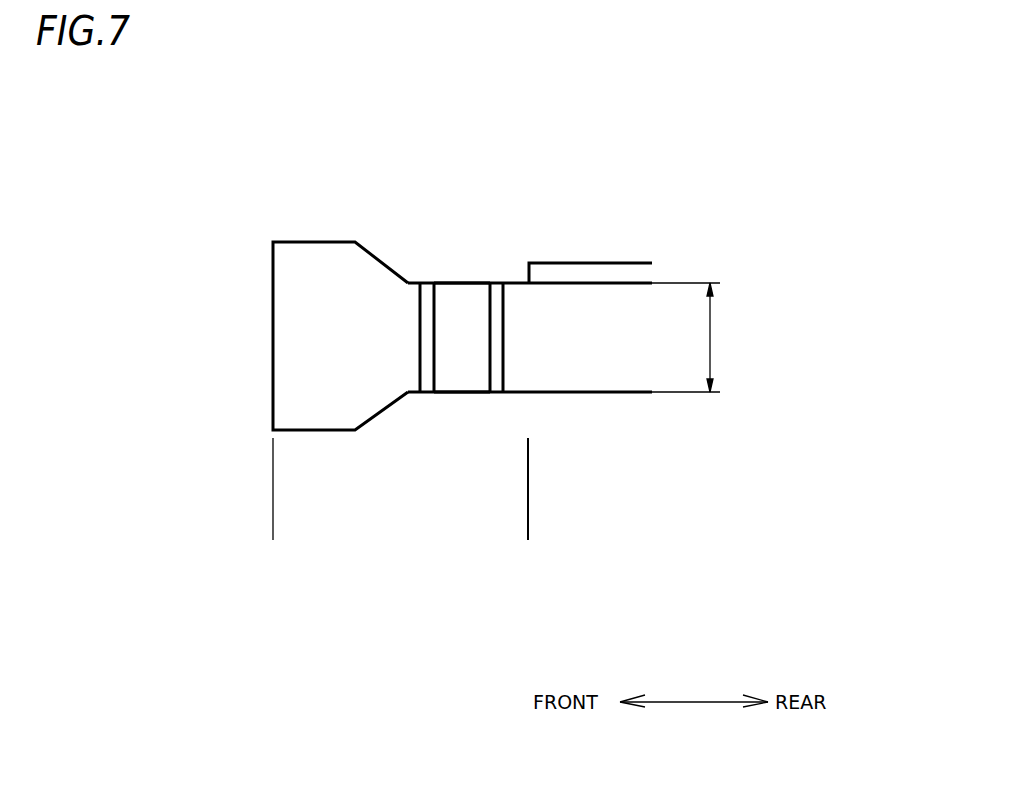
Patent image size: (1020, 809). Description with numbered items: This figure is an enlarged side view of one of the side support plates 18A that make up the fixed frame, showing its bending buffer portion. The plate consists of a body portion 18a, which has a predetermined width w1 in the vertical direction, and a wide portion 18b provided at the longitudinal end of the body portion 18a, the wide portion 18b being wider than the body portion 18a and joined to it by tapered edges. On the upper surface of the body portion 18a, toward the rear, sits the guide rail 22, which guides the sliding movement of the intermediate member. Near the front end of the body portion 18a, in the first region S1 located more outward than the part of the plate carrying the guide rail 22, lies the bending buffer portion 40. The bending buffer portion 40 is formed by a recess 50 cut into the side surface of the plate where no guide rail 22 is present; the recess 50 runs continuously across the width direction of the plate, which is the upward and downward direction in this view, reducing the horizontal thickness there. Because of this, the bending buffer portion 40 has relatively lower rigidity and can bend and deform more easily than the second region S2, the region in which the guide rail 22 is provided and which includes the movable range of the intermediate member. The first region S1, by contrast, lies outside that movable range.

The side support plate 18A is at (643, 200).
The wide portion 18b is at (340, 270).
The body portion 18a is at (612, 392).
The bending buffer portion 40 is at (460, 256).
The recess 50 is at (463, 383).
The guide rail 22 is at (568, 272).
The width w1 is at (702, 337).
The first region S1 is at (385, 545).
The second region S2 is at (628, 542).